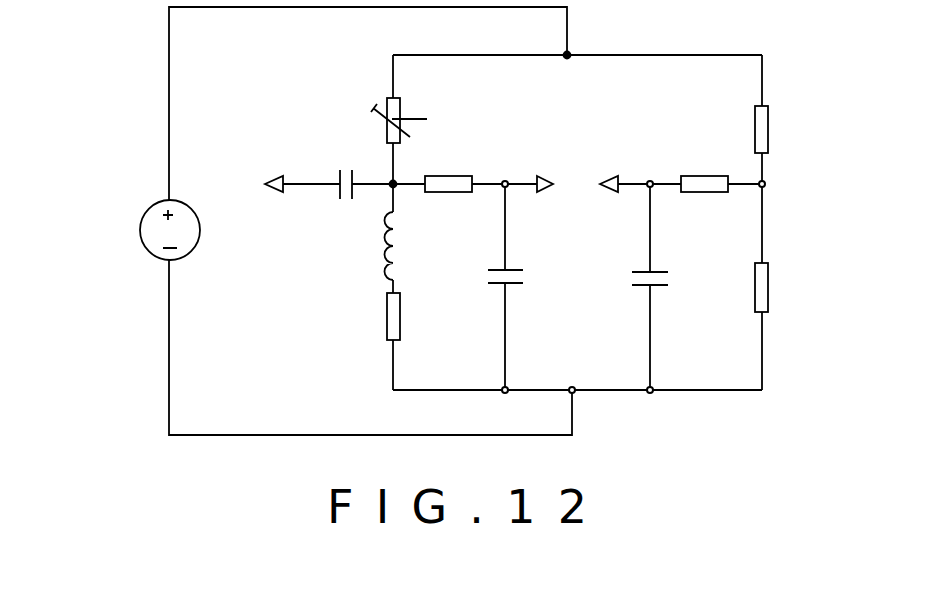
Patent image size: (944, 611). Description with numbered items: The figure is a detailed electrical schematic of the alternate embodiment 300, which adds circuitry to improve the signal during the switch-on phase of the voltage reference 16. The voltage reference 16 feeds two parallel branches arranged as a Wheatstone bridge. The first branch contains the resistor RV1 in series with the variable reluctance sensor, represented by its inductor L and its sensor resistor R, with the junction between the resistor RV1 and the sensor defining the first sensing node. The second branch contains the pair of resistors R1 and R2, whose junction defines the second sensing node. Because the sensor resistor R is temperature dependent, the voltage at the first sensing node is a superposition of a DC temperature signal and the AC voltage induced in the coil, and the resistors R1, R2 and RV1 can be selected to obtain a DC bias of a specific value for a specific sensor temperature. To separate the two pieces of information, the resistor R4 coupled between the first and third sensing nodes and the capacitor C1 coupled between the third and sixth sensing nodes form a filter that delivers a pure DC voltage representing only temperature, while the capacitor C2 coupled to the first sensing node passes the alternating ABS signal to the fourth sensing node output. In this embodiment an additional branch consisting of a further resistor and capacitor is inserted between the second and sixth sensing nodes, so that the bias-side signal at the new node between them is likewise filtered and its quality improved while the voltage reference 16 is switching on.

The voltage reference 16 is at (127, 235).
The alternate embodiment 300 is at (501, 221).
The resistor RV1 is at (409, 119).
The capacitor C2 is at (329, 170).
The resistor R4 is at (473, 170).
The inductor L is at (399, 232).
The sensor resistor R is at (404, 335).
The capacitor C1 is at (522, 287).
The resistor R1 is at (776, 119).
The resistor R2 is at (777, 287).